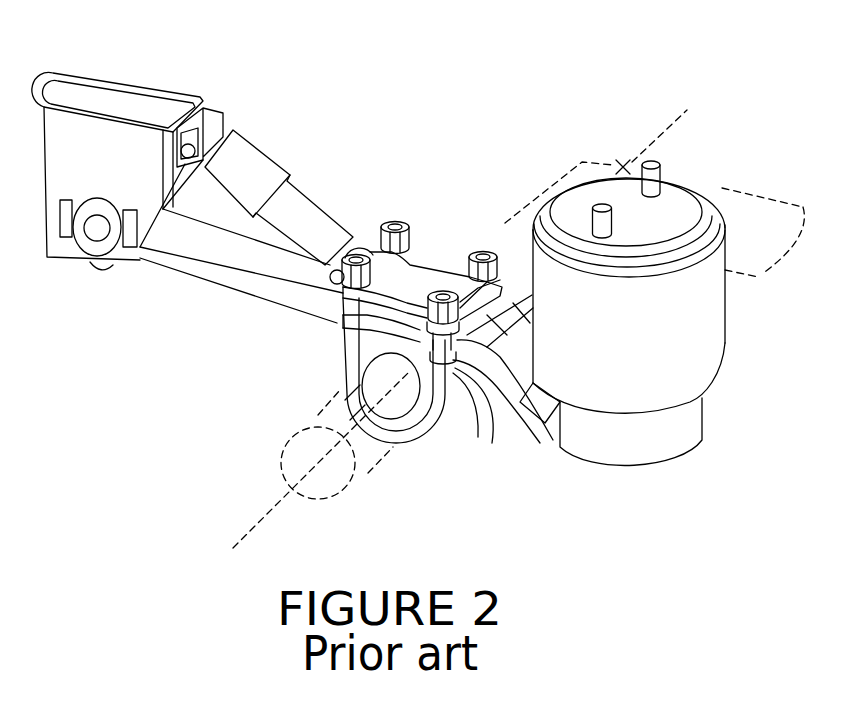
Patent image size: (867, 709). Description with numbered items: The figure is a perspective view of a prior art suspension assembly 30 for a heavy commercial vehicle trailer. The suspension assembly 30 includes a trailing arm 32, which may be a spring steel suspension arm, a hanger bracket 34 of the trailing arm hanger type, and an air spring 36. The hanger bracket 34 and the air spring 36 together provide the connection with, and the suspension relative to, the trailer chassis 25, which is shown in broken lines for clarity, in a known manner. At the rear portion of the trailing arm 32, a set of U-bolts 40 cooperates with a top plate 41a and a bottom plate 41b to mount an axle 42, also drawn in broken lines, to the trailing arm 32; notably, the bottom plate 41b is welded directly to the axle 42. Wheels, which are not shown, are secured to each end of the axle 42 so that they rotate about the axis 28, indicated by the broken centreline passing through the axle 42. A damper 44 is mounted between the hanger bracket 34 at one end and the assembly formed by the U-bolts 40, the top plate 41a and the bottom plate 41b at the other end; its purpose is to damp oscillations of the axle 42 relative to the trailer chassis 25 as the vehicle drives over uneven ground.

The trailer chassis 25 is at (723, 188).
The axis 28 is at (280, 498).
The suspension assembly 30 is at (353, 190).
The trailing arm 32 is at (240, 292).
The hanger bracket 34 is at (95, 73).
The air spring 36 is at (726, 342).
The U-bolts 40 is at (433, 430).
The top plate 41a is at (413, 265).
The bottom plate 41b is at (348, 348).
The axle 42 is at (365, 475).
The damper 44 is at (258, 152).